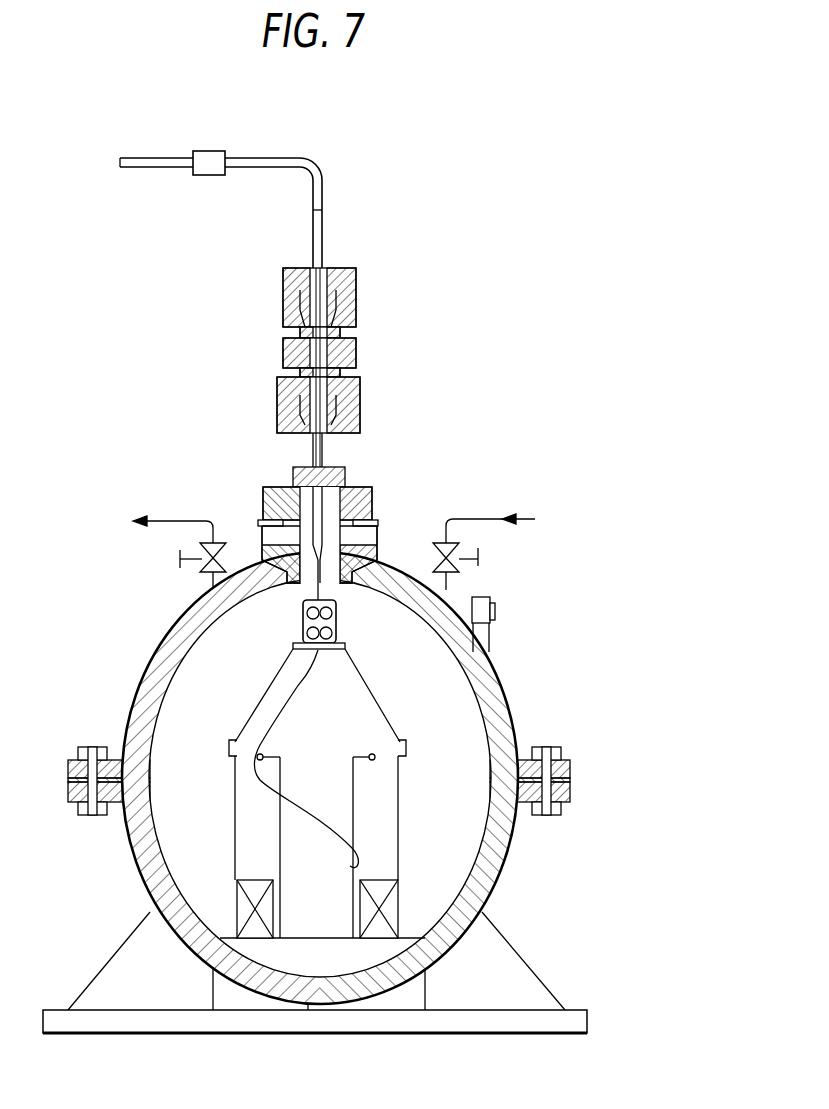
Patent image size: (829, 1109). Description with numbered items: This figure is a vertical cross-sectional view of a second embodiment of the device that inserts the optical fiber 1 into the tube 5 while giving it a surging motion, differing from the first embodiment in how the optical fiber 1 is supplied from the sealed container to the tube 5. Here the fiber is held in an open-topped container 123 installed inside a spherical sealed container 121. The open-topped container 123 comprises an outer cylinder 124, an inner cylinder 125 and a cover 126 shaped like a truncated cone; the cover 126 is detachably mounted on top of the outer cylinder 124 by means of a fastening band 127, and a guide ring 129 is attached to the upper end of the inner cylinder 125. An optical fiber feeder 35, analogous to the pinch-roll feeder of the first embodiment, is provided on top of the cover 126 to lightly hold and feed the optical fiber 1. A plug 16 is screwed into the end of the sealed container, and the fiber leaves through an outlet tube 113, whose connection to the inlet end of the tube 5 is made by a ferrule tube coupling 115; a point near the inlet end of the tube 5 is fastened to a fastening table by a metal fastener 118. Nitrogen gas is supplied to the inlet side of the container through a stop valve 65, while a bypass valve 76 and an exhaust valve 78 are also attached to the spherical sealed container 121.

The optical fiber 1 is at (300, 759).
The tube 5 is at (232, 207).
The plug 16 is at (335, 525).
The optical fiber feeder 35 is at (335, 616).
The stop valve 65 is at (485, 552).
The bypass valve 76 is at (504, 618).
The exhaust valve 78 is at (170, 551).
The outlet tube 113 is at (356, 367).
The ferrule tube coupling 115 is at (341, 350).
The metal fastener 118 is at (220, 136).
The spherical sealed container 121 is at (342, 778).
The open-topped container 123 is at (297, 838).
The outer cylinder 124 is at (425, 818).
The inner cylinder 125 is at (226, 846).
The cover 126 is at (321, 695).
The fastening band 127 is at (426, 741).
The guide ring 129 is at (375, 754).